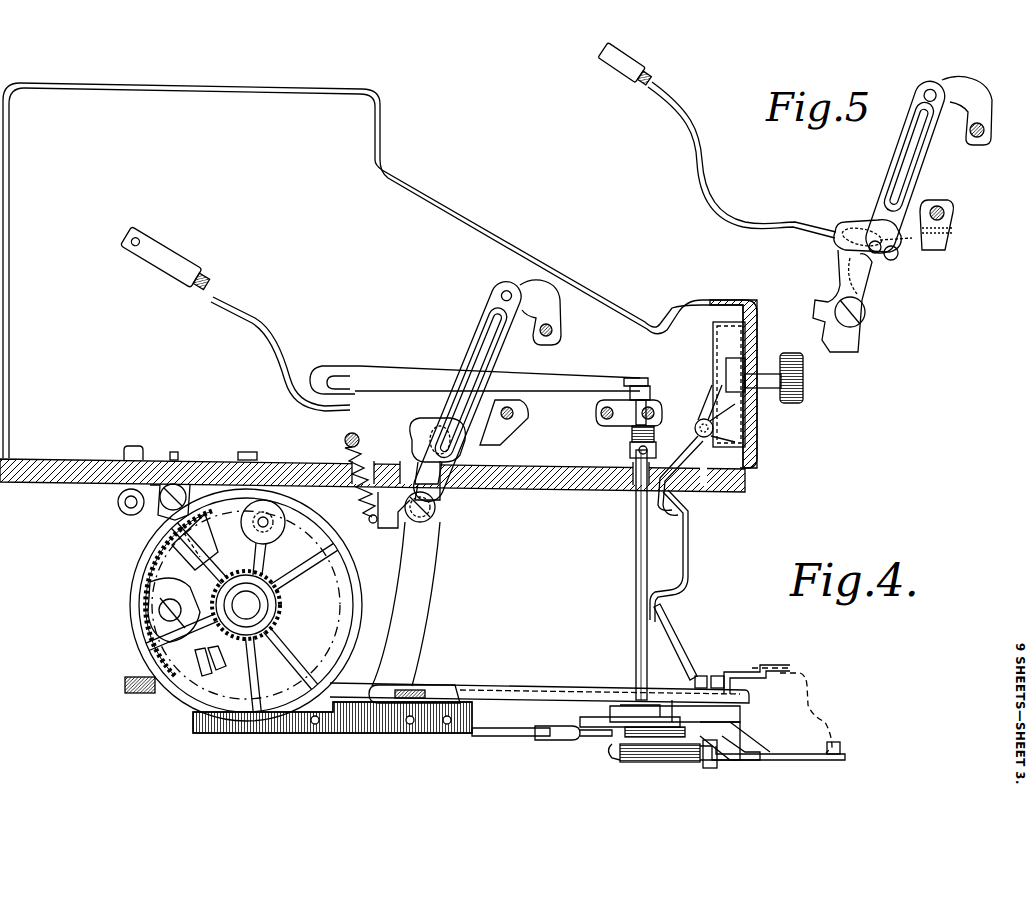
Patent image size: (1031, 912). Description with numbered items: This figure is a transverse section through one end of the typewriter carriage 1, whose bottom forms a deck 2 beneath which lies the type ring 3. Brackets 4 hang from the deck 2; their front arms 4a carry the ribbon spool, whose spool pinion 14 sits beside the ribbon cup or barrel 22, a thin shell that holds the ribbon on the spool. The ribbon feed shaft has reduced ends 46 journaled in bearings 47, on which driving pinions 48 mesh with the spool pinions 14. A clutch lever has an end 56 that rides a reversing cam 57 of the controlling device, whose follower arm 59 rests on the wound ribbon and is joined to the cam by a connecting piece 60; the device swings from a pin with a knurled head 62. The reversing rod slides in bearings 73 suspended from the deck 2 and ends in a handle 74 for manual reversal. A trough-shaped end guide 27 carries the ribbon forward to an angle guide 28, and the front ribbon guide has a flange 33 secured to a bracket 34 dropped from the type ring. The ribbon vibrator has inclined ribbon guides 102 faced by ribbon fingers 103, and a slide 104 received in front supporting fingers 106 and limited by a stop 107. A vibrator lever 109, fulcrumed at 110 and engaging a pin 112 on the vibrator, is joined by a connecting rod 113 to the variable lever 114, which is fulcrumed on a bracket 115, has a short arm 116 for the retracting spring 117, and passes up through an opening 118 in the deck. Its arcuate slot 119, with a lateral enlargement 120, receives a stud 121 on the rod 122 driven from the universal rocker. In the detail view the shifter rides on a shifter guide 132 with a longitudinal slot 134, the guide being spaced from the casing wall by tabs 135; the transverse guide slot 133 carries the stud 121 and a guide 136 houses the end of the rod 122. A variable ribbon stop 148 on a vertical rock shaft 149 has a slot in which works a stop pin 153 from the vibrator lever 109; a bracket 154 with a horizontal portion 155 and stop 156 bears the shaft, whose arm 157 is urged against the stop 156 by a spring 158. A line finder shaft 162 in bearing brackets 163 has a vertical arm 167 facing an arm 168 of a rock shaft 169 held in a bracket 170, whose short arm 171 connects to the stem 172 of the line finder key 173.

In FIG. 4, the typewriter carriage 1 is at (8, 352).
In FIG. 4, the deck 2 is at (62, 460).
In FIG. 4, the type ring 3 is at (530, 690).
In FIG. 4, the brackets 4 is at (225, 475).
In FIG. 4, the front arms 4a is at (265, 540).
In FIG. 4, the spool pinion 14 is at (295, 620).
In FIG. 4, the ribbon cup or barrel 22 is at (300, 378).
In FIG. 4, the end guides 27 is at (385, 732).
In FIG. 4, the angle guides 28 is at (618, 755).
In FIG. 4, the flanges 33 is at (708, 760).
In FIG. 4, the brackets 34 is at (735, 700).
In FIG. 4, the reduced ends 46 is at (160, 603).
In FIG. 4, the bearings 47 is at (160, 612).
In FIG. 4, the driving pinions 48 is at (165, 628).
In FIG. 4, the opposite end of lever 56 is at (196, 662).
In FIG. 4, the reversing cam 57 is at (216, 660).
In FIG. 4, the follower arm 59 is at (165, 535).
In FIG. 4, the connecting piece 60 is at (170, 486).
In FIG. 4, the knurled head 62 is at (185, 470).
In FIG. 4, the bearings 73 is at (118, 498).
In FIG. 4, the handle or head 74 is at (118, 508).
In FIG. 4, the inclined ribbon guides 102 is at (645, 760).
In FIG. 4, the ribbon fingers 103 is at (668, 760).
In FIG. 4, the slide 104 is at (790, 752).
In FIG. 4, the front supporting and guiding fingers 106 is at (765, 758).
In FIG. 4, the stop 107 is at (840, 746).
In FIG. 4, the vibrator lever 109 is at (660, 705).
In FIG. 4, the fulcrum 110 is at (672, 700).
In FIG. 4, the pin 112 is at (725, 748).
In FIG. 4, the connecting rod 113 is at (484, 690).
In FIG. 4, the variable lever 114 is at (425, 585).
In FIG. 5, the variable lever 114 is at (860, 342).
In FIG. 4, the bracket 115 is at (440, 505).
In FIG. 4, the short arm 116 is at (392, 515).
In FIG. 4, the retracting spring 117 is at (358, 492).
In FIG. 4, the opening 118 is at (410, 470).
In FIG. 4, the longitudinal slot 119 is at (490, 325).
In FIG. 5, the longitudinal slot 119 is at (935, 165).
In FIG. 4, the lateral enlargement 120 is at (425, 435).
In FIG. 5, the lateral enlargement 120 is at (838, 238).
In FIG. 4, the stud 121 is at (500, 425).
In FIG. 5, the stud 121 is at (880, 255).
In FIG. 5, the rod 122 is at (787, 220).
In FIG. 5, the shifter guide 132 is at (928, 94).
In FIG. 5, the transverse guide slot 133 is at (898, 256).
In FIG. 5, the longitudinal slot 134 is at (948, 80).
In FIG. 5, the tabs 135 is at (982, 137).
In FIG. 5, the guide 136 is at (905, 247).
In FIG. 4, the variable ribbon stop 148 is at (715, 712).
In FIG. 4, the vertical rock shaft 149 is at (634, 585).
In FIG. 4, the stop pin 153 is at (640, 728).
In FIG. 4, the bracket 154 is at (615, 425).
In FIG. 4, the horizontal portion 155 is at (652, 397).
In FIG. 4, the stop 156 is at (632, 380).
In FIG. 4, the arm 157 is at (648, 385).
In FIG. 4, the spring 158 is at (656, 435).
In FIG. 4, the line finder shaft 162 is at (700, 676).
In FIG. 4, the bearing brackets 163 is at (722, 676).
In FIG. 4, the arm 167 is at (672, 640).
In FIG. 4, the arm 168 is at (688, 572).
In FIG. 4, the rock shaft 169 is at (712, 438).
In FIG. 4, the bracket 170 is at (745, 428).
In FIG. 4, the short arm 171 is at (700, 410).
In FIG. 4, the stem 172 is at (765, 372).
In FIG. 4, the line finder key 173 is at (803, 380).